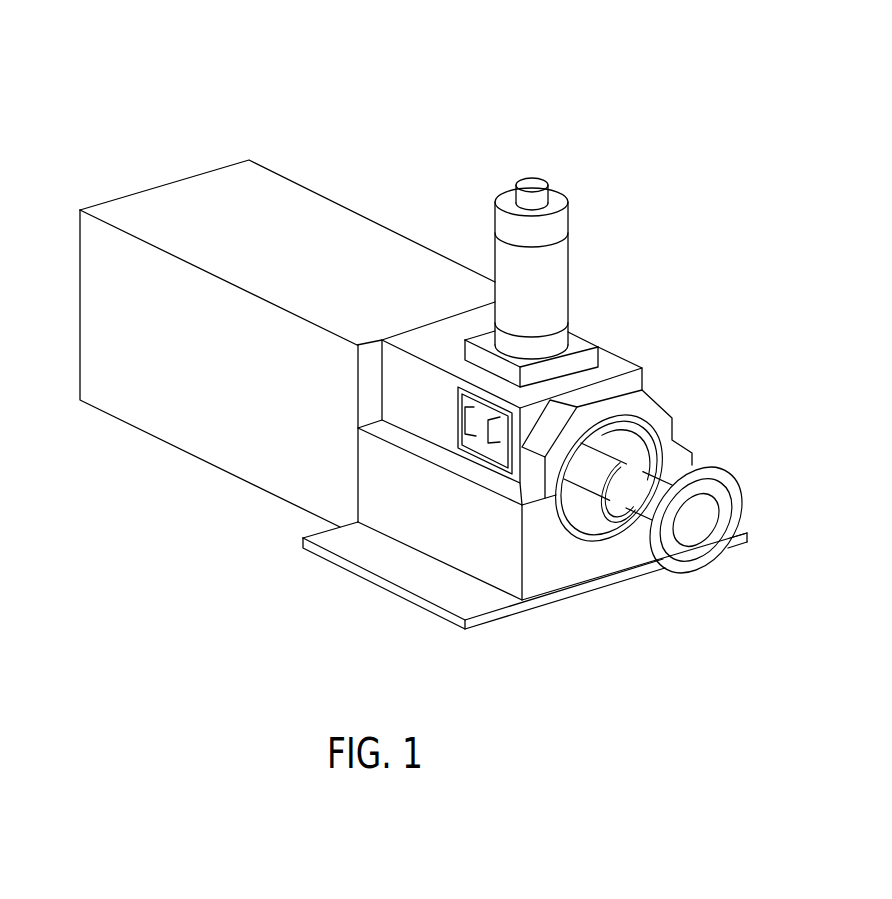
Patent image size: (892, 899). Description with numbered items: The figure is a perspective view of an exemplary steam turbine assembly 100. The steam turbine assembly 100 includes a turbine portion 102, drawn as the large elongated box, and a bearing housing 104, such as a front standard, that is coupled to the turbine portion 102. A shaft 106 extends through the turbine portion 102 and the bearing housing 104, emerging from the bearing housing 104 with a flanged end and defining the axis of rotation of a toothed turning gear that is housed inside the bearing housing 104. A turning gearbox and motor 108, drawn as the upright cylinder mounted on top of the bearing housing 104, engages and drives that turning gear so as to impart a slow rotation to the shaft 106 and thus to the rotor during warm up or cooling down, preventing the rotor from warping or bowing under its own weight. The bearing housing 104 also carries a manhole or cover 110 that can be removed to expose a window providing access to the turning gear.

The steam turbine assembly 100 is at (505, 65).
The turbine portion 102 is at (333, 217).
The bearing housing 104 is at (613, 360).
The shaft 106 is at (715, 470).
The turning gearbox and motor 108 is at (563, 200).
The manhole or cover 110 is at (468, 436).